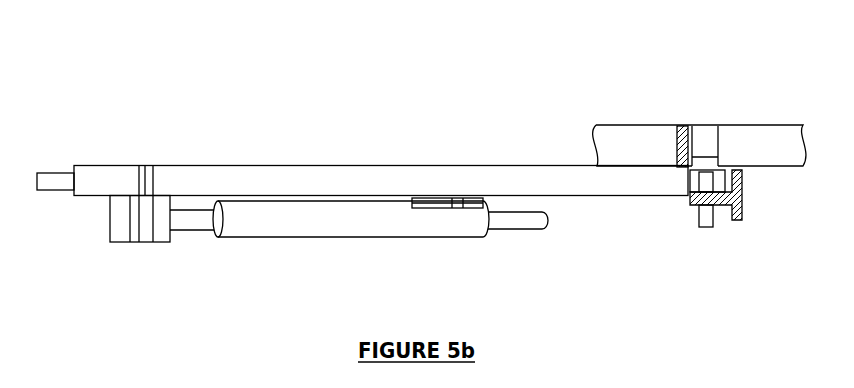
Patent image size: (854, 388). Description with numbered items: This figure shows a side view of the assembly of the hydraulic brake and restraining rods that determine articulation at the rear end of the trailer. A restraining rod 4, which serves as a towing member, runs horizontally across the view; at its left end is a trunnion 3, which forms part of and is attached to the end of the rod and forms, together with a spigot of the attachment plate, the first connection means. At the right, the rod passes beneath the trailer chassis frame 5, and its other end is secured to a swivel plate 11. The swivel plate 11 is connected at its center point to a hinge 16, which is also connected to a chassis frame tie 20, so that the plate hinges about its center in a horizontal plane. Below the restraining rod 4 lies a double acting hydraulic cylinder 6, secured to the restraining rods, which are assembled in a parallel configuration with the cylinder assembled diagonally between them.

The trunnion 3 is at (55, 191).
The restraining rod 4 is at (197, 165).
The trailer chassis frame 5 is at (632, 125).
The double acting hydraulic cylinder 6 is at (348, 237).
The swivel plate 11 is at (737, 218).
The hinge 16 is at (707, 170).
The chassis frame tie 20 is at (677, 147).